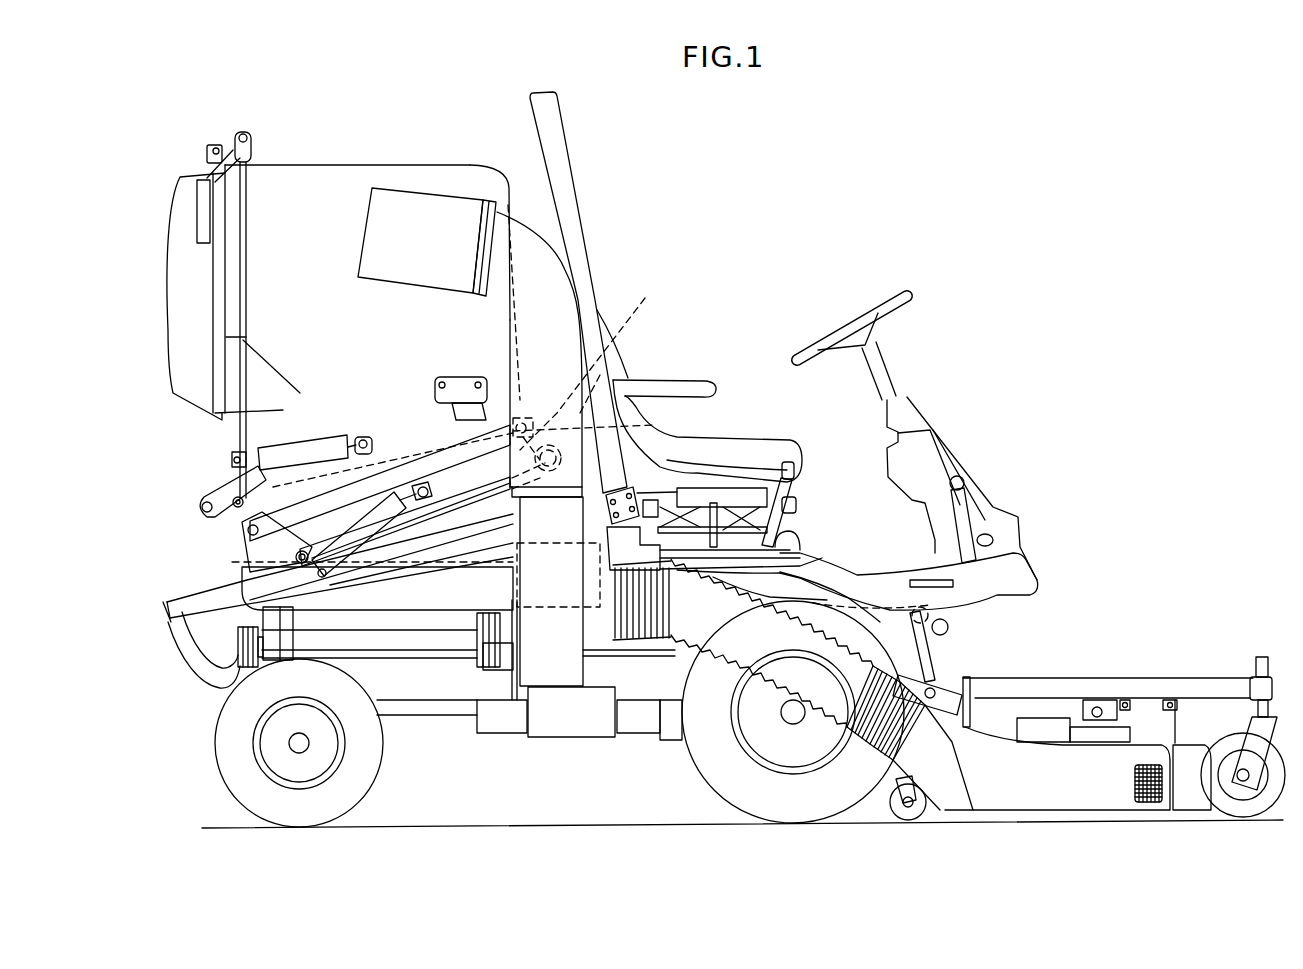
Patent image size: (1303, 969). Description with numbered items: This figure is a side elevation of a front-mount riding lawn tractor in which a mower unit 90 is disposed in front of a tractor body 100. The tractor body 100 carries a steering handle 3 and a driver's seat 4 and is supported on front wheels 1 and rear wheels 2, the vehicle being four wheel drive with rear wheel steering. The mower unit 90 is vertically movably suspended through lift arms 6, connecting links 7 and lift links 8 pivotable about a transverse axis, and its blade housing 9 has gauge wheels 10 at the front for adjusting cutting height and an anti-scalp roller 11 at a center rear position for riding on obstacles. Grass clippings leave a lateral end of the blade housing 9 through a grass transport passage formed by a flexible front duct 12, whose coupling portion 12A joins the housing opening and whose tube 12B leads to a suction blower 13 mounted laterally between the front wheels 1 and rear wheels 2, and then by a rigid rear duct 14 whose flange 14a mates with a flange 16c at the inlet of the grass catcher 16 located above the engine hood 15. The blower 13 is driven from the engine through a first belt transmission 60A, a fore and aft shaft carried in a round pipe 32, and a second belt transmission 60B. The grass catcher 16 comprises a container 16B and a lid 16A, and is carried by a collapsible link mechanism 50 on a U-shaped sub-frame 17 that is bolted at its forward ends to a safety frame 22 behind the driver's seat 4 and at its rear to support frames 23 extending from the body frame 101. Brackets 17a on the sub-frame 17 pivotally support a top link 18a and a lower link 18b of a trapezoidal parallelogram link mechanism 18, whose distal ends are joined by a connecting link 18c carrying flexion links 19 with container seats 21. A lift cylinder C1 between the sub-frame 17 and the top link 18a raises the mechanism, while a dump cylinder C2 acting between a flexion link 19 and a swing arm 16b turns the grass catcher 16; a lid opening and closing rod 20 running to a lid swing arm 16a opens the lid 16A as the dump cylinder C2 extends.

The front wheels 1 is at (707, 778).
The rear wheels 2 is at (357, 795).
The steering handle 3 is at (851, 325).
The driver's seat 4 is at (737, 447).
The lift arms 6 is at (850, 585).
The connecting links 7 is at (932, 658).
The lift links 8 is at (955, 686).
The blade housing 9 is at (1190, 750).
The gauge wheels 10 is at (1235, 735).
The anti-scalp roller 11 is at (891, 800).
The front duct 12 is at (988, 737).
The coupling portion 12A is at (1103, 748).
The tube 12B is at (733, 655).
The suction blower 13 is at (562, 680).
The rear duct 14 is at (581, 290).
The flange 14a is at (499, 212).
The engine hood 15 is at (601, 335).
The grass catcher 16 is at (383, 163).
The lid 16A is at (188, 398).
The lid swing arm 16a is at (243, 137).
The container 16B is at (318, 163).
The swing arms 16b is at (207, 500).
The flange 16c is at (481, 193).
The sub-frame 17 is at (208, 597).
The brackets 17a is at (247, 552).
The trapezoidal parallelogram link mechanism 18 is at (424, 519).
The top link 18a is at (337, 497).
The lower link 18b is at (452, 503).
The connecting link 18c is at (648, 426).
The flexion links 19 is at (390, 440).
The lid opening and closing rod 20 is at (247, 258).
The container seats 21 is at (491, 376).
The safety frame 22 is at (562, 125).
The support frames 23 is at (212, 682).
The round pipe 32 is at (423, 645).
The collapsible link mechanism 50 is at (366, 436).
The first belt transmission 60A is at (232, 641).
The second belt transmission 60B is at (494, 672).
The mower unit 90 is at (1097, 635).
The tractor body 100 is at (948, 380).
The body frame 101 is at (390, 695).
The lift cylinder C1 is at (370, 545).
The dump cylinder C2 is at (300, 438).